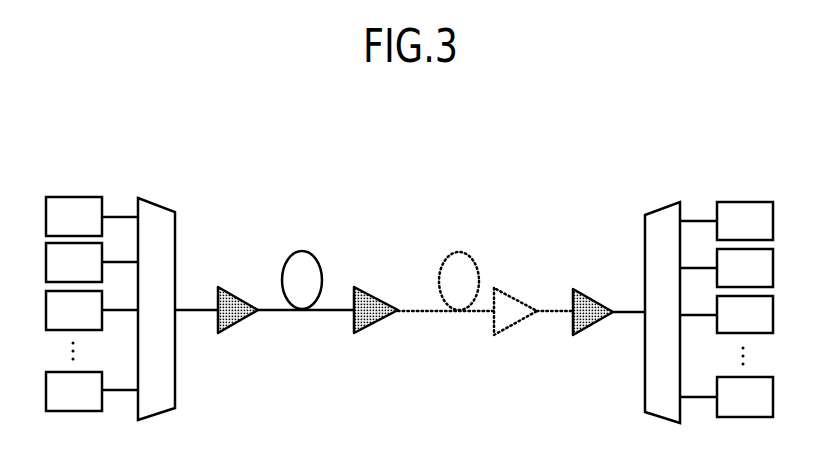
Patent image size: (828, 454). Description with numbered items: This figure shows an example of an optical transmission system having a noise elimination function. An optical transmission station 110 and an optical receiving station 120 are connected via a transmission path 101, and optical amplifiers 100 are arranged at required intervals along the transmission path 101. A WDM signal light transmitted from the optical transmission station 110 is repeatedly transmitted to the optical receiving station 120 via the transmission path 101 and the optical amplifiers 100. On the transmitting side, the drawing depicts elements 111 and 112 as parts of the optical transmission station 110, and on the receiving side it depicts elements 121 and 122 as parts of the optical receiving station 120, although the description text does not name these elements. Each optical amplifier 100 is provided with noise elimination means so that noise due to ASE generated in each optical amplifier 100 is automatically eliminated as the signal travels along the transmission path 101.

The optical amplifier 100 is at (235, 290).
The transmission path 101 is at (313, 252).
The optical transmission station 110 is at (147, 131).
The electrical-to-optical converter 111 is at (79, 177).
The optical multiplexer 112 is at (158, 203).
The optical receiving station 120 is at (661, 130).
The optical demultiplexer 121 is at (657, 208).
The optical-to-electrical converter 122 is at (735, 182).